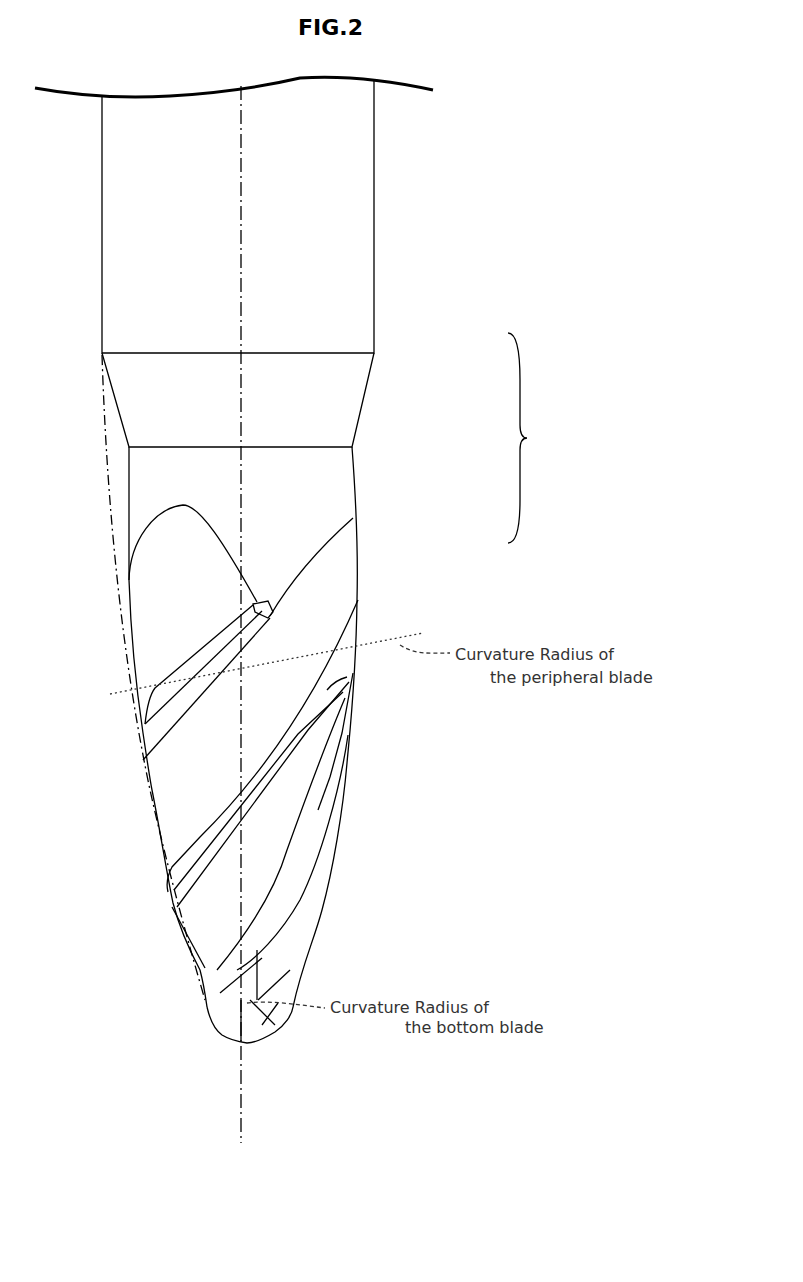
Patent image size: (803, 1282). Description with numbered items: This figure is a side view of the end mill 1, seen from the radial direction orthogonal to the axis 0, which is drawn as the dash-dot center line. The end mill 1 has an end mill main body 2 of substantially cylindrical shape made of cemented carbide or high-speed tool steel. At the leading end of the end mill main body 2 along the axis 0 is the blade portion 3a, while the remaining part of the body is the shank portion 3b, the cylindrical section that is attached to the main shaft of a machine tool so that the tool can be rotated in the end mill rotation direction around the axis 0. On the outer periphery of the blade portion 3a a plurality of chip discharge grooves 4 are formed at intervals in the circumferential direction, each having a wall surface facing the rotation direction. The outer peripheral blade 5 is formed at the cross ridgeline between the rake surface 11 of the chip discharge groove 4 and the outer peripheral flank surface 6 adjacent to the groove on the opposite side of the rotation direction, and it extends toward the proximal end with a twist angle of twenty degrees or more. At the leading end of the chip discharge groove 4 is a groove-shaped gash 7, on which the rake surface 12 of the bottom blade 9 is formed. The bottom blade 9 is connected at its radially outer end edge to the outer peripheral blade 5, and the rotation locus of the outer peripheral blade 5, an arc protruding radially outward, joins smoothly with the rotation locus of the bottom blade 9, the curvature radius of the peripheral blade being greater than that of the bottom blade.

The axis 0 is at (243, 140).
The end mill 1 is at (437, 142).
The end mill main body 2 is at (529, 438).
The blade portion 3a is at (406, 545).
The shank portion 3b is at (406, 326).
The chip discharge groove 4 is at (198, 578).
The outer peripheral blade 5 is at (180, 672).
The outer peripheral flank surface 6 is at (210, 645).
The gash 7 is at (226, 1009).
The bottom blade 9 is at (287, 1000).
The rake surface of the outer peripheral blade 11 is at (347, 760).
The rake surface of the bottom blade 12 is at (283, 1019).